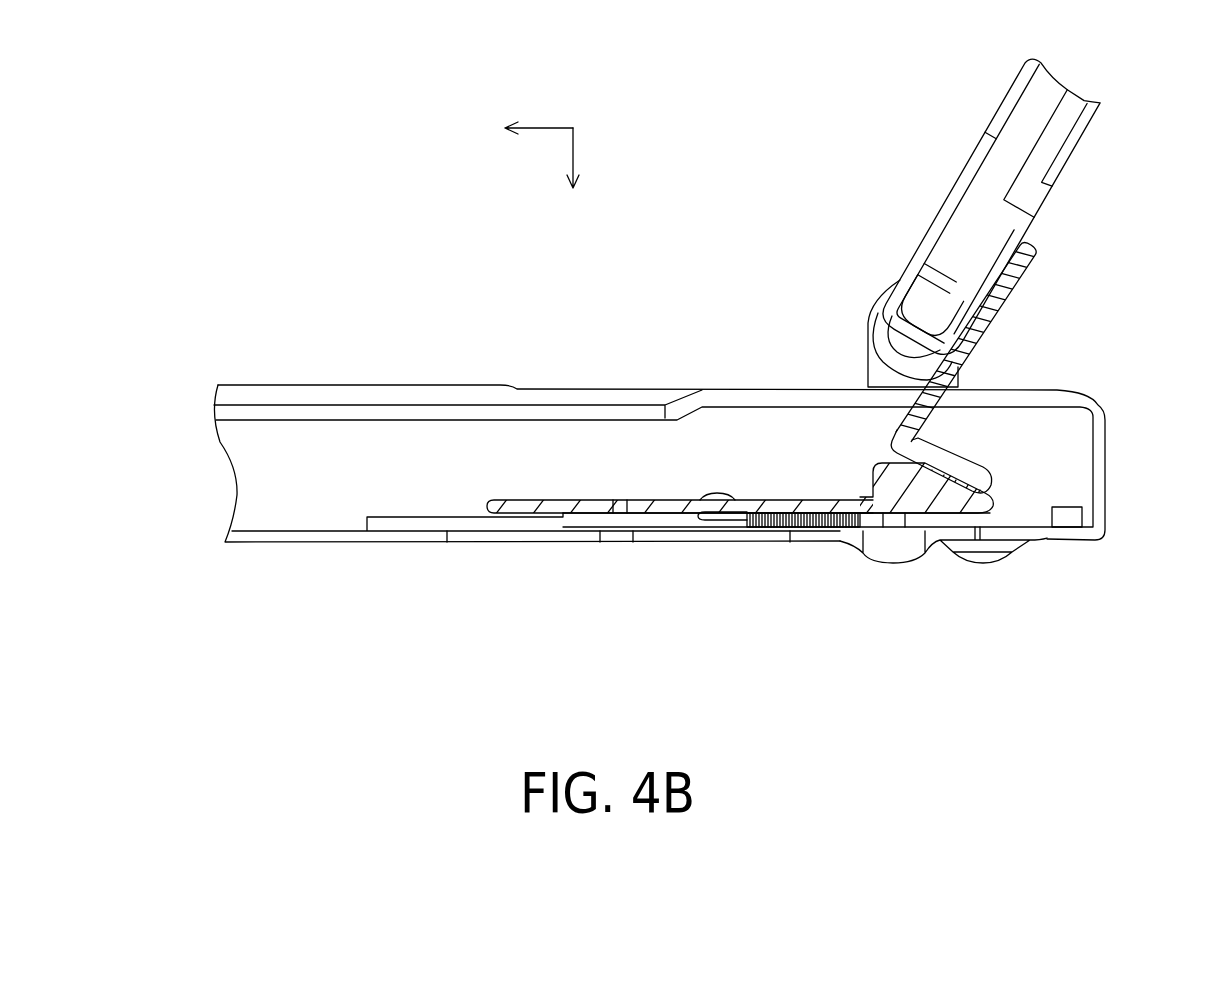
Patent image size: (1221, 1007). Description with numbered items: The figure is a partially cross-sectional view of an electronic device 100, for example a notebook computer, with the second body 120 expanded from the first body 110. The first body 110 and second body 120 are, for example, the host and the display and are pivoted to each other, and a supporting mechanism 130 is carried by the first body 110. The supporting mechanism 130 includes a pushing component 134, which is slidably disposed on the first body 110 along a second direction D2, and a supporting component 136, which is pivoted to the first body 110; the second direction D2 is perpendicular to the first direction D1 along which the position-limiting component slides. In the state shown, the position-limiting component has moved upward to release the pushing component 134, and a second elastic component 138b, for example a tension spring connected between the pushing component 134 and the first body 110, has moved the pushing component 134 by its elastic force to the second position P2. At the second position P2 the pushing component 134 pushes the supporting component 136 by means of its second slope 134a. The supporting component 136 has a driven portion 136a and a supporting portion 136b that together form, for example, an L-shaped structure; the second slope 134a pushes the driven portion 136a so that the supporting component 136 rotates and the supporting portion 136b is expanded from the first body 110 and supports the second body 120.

The electronic device 100 is at (1163, 645).
The first body 110 is at (313, 535).
The second body 120 is at (1072, 153).
The supporting mechanism 130 is at (941, 580).
The pushing component 134 is at (667, 507).
The second slope 134a is at (935, 455).
The supporting component 136 is at (793, 218).
The driven portion 136a is at (893, 443).
The supporting portion 136b is at (997, 292).
The second elastic component 138b is at (808, 527).
The second position P2 is at (650, 476).
The first direction D1 is at (575, 152).
The second direction D2 is at (548, 127).